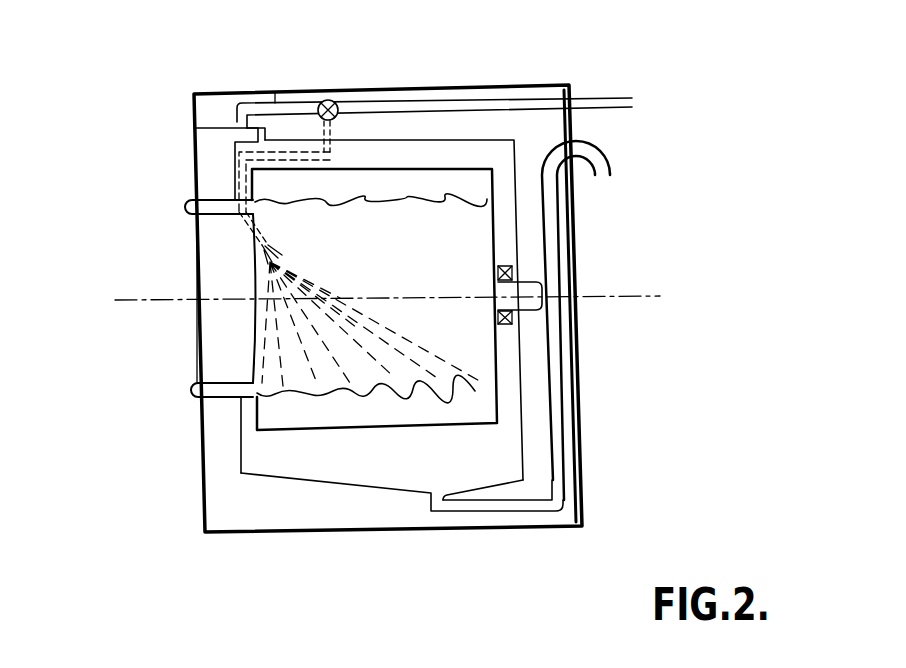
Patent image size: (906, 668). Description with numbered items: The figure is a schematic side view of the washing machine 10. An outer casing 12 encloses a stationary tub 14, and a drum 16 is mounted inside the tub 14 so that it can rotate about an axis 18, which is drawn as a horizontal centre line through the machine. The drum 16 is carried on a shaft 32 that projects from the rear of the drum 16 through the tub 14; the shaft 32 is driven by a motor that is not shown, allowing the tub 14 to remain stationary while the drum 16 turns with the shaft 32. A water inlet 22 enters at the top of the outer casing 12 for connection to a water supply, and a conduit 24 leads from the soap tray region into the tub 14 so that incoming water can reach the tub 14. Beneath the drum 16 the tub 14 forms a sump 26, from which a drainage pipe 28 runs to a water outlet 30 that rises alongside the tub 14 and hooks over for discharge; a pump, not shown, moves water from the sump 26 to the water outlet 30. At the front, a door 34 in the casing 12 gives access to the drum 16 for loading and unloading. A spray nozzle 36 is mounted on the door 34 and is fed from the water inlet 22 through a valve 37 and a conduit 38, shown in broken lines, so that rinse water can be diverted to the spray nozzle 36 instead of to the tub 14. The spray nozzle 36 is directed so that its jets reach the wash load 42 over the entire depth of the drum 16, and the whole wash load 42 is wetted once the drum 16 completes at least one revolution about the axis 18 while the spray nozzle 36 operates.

The washing machine 10 is at (178, 435).
The outer casing 12 is at (516, 86).
The tub 14 is at (425, 140).
The drum 16 is at (498, 408).
The axis 18 is at (632, 295).
The water inlet 22 is at (597, 100).
The conduit 24 is at (258, 139).
The sump 26 is at (393, 452).
The drainage pipe 28 is at (500, 513).
The water outlet 30 is at (596, 143).
The shaft 32 is at (527, 292).
The door 34 is at (253, 293).
The spray nozzle 36 is at (262, 247).
The valve 37 is at (329, 99).
The conduit 38 is at (238, 180).
The wash load 42 is at (390, 185).